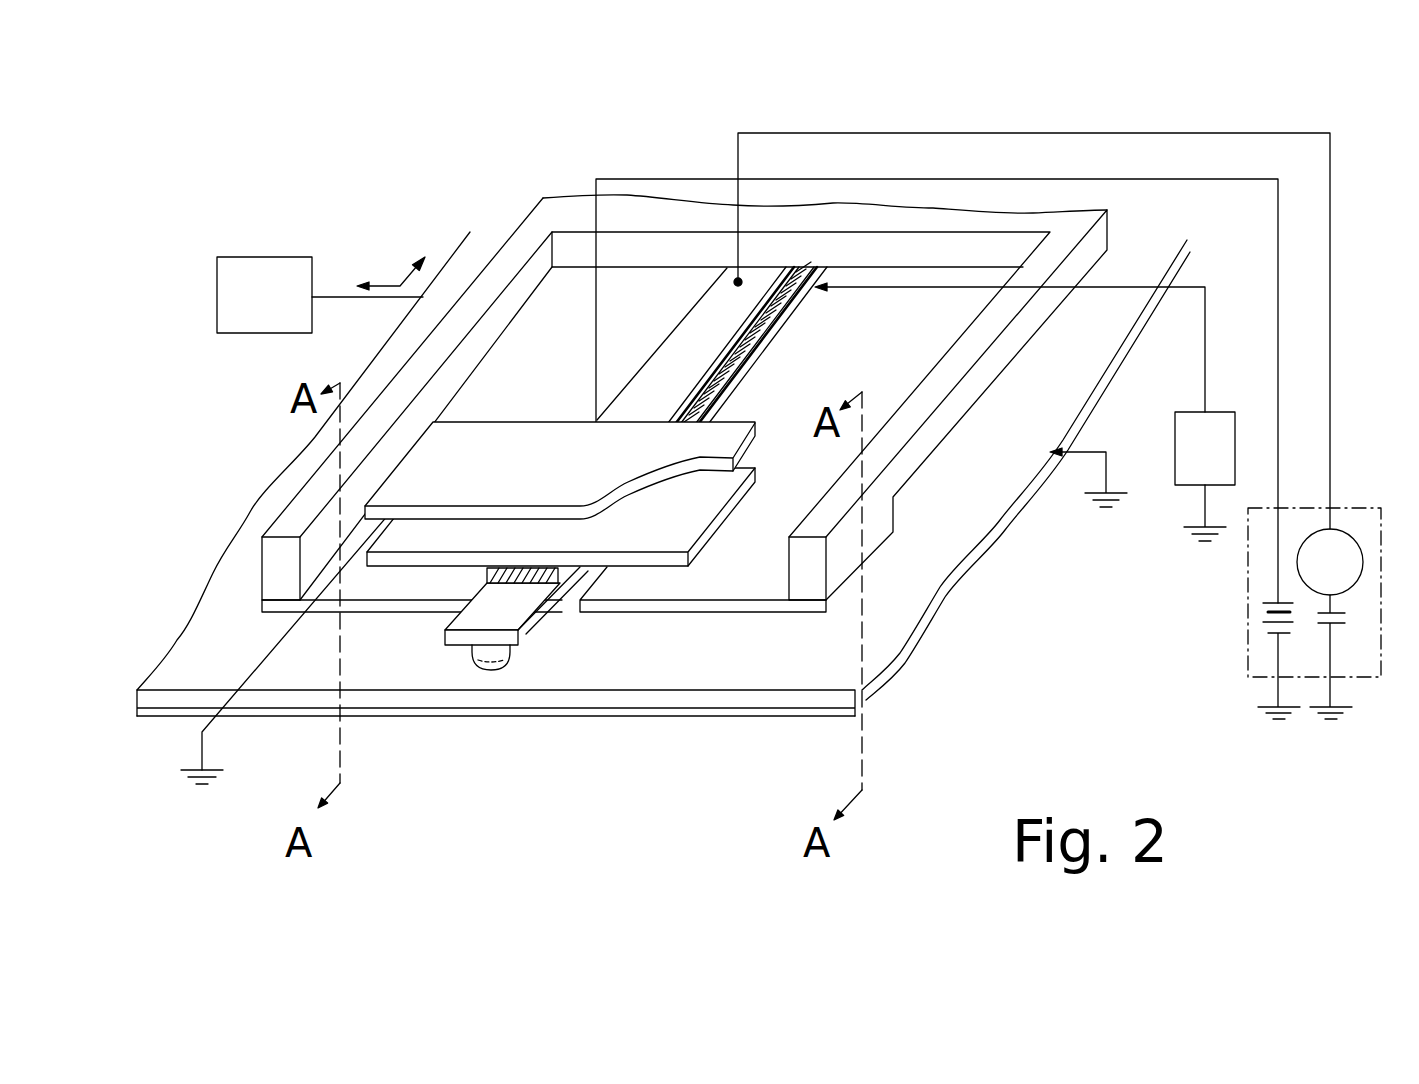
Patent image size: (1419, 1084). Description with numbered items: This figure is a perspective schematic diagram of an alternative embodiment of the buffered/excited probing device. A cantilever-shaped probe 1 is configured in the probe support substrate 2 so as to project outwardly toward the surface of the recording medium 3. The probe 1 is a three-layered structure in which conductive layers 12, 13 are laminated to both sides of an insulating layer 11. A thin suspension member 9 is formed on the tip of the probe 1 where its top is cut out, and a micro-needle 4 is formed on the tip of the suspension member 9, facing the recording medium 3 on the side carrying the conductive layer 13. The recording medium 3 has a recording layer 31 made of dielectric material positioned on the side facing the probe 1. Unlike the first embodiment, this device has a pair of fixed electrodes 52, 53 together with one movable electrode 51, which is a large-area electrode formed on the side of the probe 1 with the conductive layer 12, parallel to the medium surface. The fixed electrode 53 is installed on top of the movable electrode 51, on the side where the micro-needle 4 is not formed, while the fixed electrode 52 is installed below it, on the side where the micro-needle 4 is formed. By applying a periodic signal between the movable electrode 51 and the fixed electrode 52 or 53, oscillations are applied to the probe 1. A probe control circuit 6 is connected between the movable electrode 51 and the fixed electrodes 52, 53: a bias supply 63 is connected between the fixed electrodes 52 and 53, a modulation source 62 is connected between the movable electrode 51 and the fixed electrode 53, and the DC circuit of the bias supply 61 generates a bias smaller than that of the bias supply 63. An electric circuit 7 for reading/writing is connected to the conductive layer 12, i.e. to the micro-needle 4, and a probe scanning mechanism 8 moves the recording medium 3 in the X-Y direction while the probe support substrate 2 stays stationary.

The probe 1 is at (557, 388).
The probe support substrate 2 is at (1033, 333).
The recording medium 3 is at (266, 468).
The micro-needle 4 is at (495, 668).
The probe control circuit 6 is at (1236, 590).
The electric circuit for reading/writing 7 is at (1222, 412).
The probe scanning mechanism 8 is at (278, 257).
The suspension member 9 is at (573, 590).
The insulating layer 11 is at (815, 300).
The conductive layer 12 is at (745, 302).
The conductive layer 13 is at (765, 347).
The recording layer 31 is at (648, 670).
The movable electrode 51 is at (713, 497).
The fixed electrode 52 is at (722, 578).
The fixed electrode 53 is at (718, 425).
The bias supply 61 is at (1348, 625).
The modulation source 62 is at (1350, 542).
The bias supply 63 is at (1258, 619).